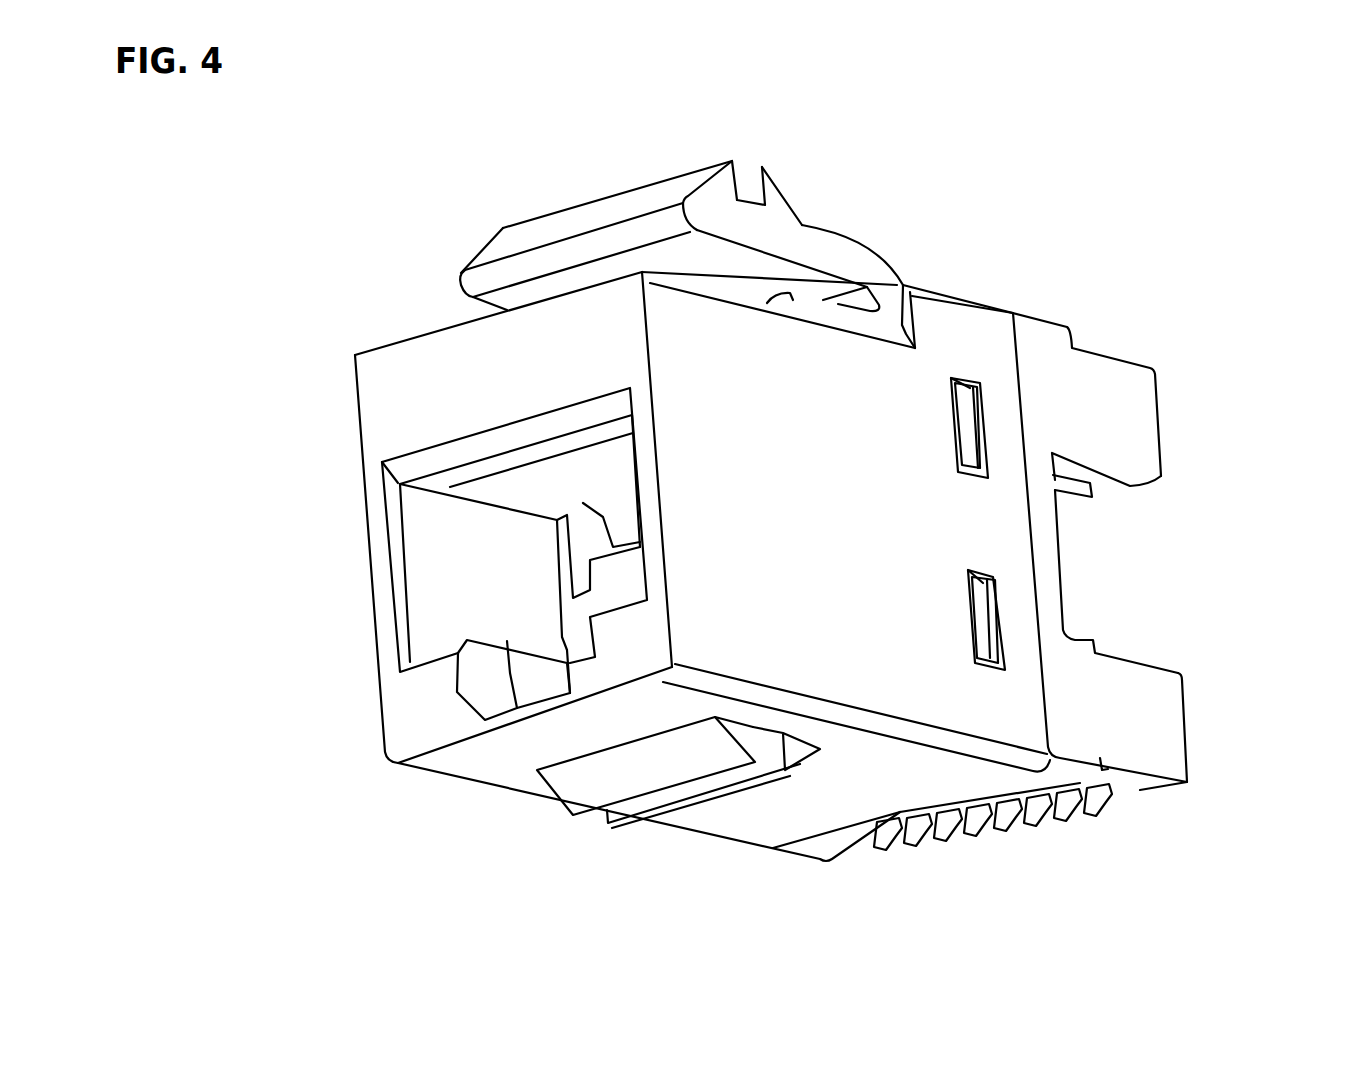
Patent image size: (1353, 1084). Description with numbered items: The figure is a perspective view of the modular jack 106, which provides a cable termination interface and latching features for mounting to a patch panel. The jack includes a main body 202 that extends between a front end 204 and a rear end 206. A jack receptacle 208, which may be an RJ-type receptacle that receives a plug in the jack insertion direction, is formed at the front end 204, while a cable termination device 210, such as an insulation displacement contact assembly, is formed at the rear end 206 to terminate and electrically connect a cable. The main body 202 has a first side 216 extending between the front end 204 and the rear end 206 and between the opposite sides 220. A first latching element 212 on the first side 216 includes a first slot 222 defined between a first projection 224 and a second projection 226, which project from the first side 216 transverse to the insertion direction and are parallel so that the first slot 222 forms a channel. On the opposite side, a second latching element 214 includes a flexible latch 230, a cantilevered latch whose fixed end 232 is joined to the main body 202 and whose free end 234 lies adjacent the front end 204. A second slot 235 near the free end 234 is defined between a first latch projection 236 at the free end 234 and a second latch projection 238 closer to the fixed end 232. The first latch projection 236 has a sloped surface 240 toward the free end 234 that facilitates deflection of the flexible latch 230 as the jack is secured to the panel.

The modular jack 106 is at (288, 212).
The main body 202 is at (988, 323).
The front end 204 is at (362, 765).
The rear end 206 is at (1195, 800).
The jack receptacle 208 is at (437, 563).
The cable termination device 210 is at (1177, 421).
The first latching element 212 is at (592, 867).
The second latching element 214 is at (720, 100).
The first side 216 is at (837, 792).
The opposite sides 220 is at (990, 360).
The first slot 222 is at (673, 790).
The first projection 224 is at (583, 780).
The second projection 226 is at (713, 793).
The flexible latch 230 is at (850, 257).
The fixed end 232 is at (913, 270).
The free end 234 is at (458, 277).
The second slot 235 is at (748, 183).
The first latch projection 236 is at (720, 183).
The second latch projection 238 is at (773, 193).
The sloped surface 240 is at (530, 232).